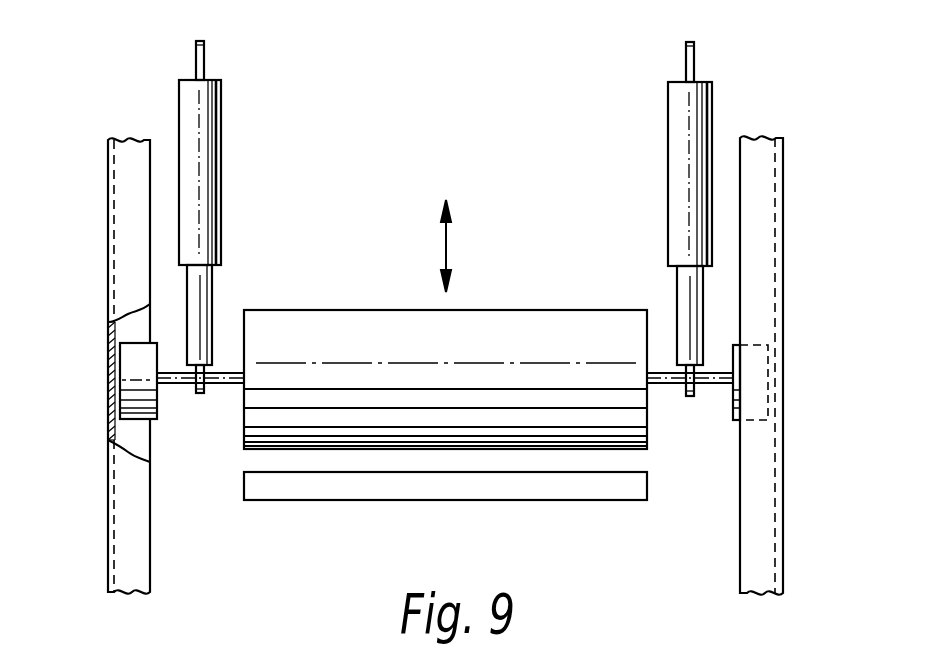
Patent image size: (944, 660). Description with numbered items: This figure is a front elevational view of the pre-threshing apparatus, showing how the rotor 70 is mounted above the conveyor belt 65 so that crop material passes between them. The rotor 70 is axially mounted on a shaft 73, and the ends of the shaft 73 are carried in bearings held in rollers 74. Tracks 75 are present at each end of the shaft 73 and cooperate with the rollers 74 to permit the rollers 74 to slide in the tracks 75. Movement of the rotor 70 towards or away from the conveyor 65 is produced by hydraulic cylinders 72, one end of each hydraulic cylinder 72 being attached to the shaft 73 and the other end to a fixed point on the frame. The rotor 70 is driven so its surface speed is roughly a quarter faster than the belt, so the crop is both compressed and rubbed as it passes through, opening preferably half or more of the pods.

The conveyor belt 65 is at (300, 490).
The rotor 70 is at (541, 336).
The hydraulic cylinder 72 is at (222, 117).
The shaft 73 is at (178, 388).
The roller 74 is at (130, 364).
The track 75 is at (125, 182).